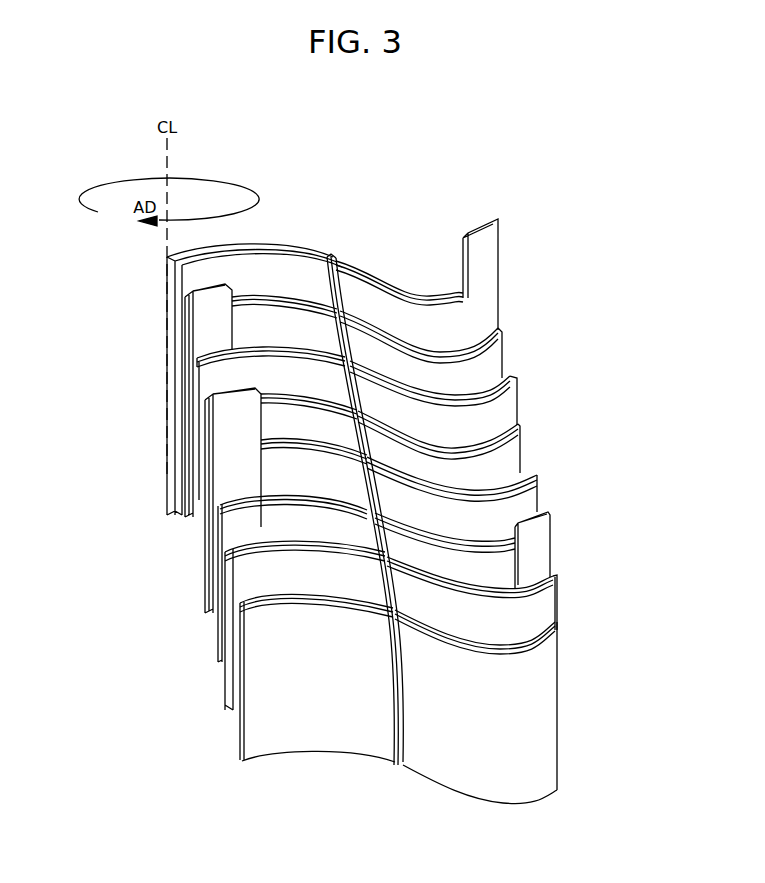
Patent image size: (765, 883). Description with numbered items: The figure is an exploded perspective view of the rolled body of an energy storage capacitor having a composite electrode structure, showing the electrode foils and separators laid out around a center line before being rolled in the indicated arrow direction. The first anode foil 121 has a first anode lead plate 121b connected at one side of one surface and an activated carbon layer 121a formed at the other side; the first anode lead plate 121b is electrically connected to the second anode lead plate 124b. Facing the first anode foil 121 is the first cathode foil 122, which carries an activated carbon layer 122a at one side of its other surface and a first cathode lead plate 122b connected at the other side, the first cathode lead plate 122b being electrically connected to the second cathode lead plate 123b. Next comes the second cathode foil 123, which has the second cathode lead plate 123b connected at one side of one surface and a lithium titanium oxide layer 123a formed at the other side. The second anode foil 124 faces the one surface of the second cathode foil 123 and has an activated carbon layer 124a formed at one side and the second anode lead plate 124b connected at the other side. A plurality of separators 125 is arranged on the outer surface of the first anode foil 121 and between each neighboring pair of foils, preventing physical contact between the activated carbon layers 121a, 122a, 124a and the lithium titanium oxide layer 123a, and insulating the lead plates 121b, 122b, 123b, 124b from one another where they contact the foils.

The first anode foil 121 is at (506, 274).
The activated carbon layer 121a is at (443, 322).
The first anode lead plate 121b is at (490, 264).
The first cathode foil 122 is at (212, 400).
The activated carbon layer 122a is at (240, 343).
The first cathode lead plate 122b is at (203, 315).
The second cathode foil 123 is at (237, 500).
The lithium titanium oxide (LTO) layer 123a is at (247, 438).
The second cathode lead plate 123b is at (230, 420).
The second anode foil 124 is at (511, 571).
The activated carbon layer 124a is at (502, 623).
The second anode lead plate 124b is at (533, 557).
The separators 125 is at (443, 363).